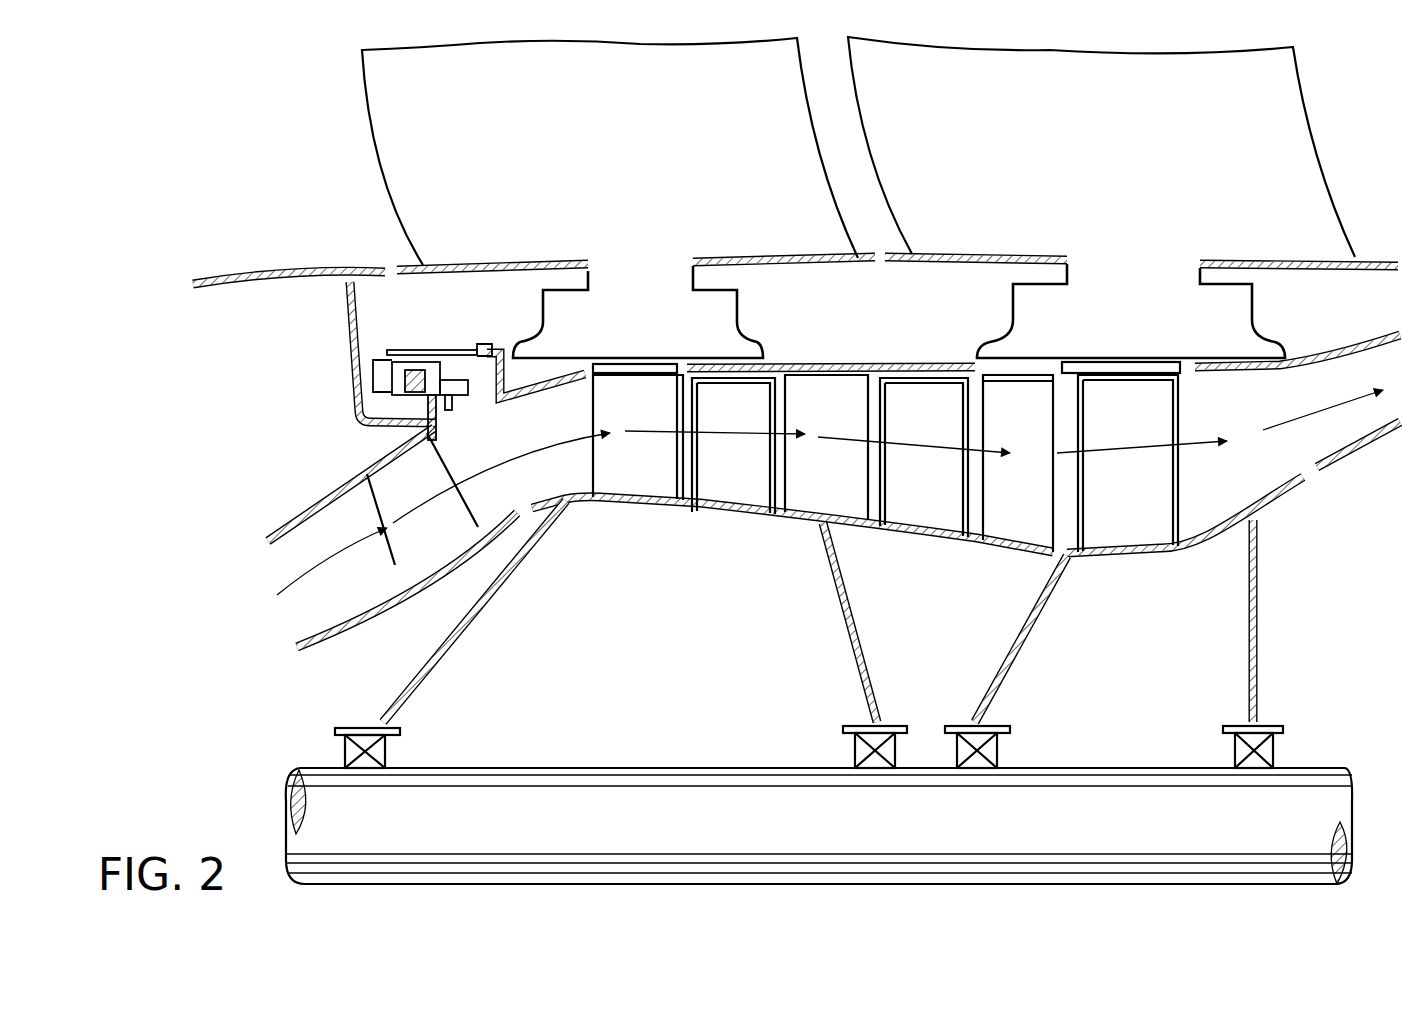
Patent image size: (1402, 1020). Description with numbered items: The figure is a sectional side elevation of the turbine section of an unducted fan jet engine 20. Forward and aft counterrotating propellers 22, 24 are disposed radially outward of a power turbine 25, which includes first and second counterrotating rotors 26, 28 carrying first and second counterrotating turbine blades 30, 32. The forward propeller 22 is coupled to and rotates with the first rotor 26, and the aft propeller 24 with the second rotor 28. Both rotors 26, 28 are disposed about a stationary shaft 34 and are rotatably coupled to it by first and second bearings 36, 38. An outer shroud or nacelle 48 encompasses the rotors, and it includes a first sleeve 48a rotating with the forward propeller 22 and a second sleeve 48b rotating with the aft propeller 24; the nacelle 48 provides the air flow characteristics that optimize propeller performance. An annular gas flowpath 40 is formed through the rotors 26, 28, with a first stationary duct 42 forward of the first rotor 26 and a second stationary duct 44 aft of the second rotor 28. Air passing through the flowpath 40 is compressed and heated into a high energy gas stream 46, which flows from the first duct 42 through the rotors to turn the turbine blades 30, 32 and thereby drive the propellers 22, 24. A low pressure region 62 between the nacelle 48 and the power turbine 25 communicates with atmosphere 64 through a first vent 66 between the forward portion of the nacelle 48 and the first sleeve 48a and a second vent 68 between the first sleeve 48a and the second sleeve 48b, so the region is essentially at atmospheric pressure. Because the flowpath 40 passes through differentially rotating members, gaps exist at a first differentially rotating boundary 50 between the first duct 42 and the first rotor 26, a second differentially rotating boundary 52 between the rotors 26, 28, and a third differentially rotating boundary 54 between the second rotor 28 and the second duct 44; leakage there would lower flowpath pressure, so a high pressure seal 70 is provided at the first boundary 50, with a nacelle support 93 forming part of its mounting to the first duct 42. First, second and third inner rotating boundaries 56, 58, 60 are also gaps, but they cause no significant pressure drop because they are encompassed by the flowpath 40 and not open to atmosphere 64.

The unducted fan jet engine 20 is at (287, 148).
The forward propeller 22 is at (558, 118).
The aft propeller 24 is at (1076, 116).
The power turbine 25 is at (507, 350).
The first rotor 26 is at (560, 372).
The second rotor 28 is at (1030, 367).
The first turbine blades 30 is at (618, 406).
The second turbine blades 32 is at (704, 406).
The stationary shaft 34 is at (776, 825).
The first bearings 36 is at (390, 755).
The second bearings 38 is at (998, 757).
The annular gas flowpath 40 is at (244, 591).
The first stationary duct 42 is at (338, 490).
The second stationary duct 44 is at (1313, 353).
The high energy gas stream 46 is at (327, 567).
The nacelle 48 is at (293, 270).
The first sleeve 48a is at (412, 267).
The second sleeve 48b is at (902, 253).
The first differentially rotating boundary 50 is at (477, 412).
The second differentially rotating boundary 52 is at (685, 360).
The third differentially rotating boundary 54 is at (1192, 367).
The first inner rotating boundary 56 is at (523, 510).
The second inner rotating boundary 58 is at (1057, 538).
The third inner rotating boundary 60 is at (1307, 470).
The low pressure region 62 is at (431, 306).
The atmosphere 64 is at (291, 65).
The first vent 66 is at (388, 268).
The second vent 68 is at (880, 257).
The high pressure seal 70 is at (423, 355).
The nacelle support 93 is at (346, 316).